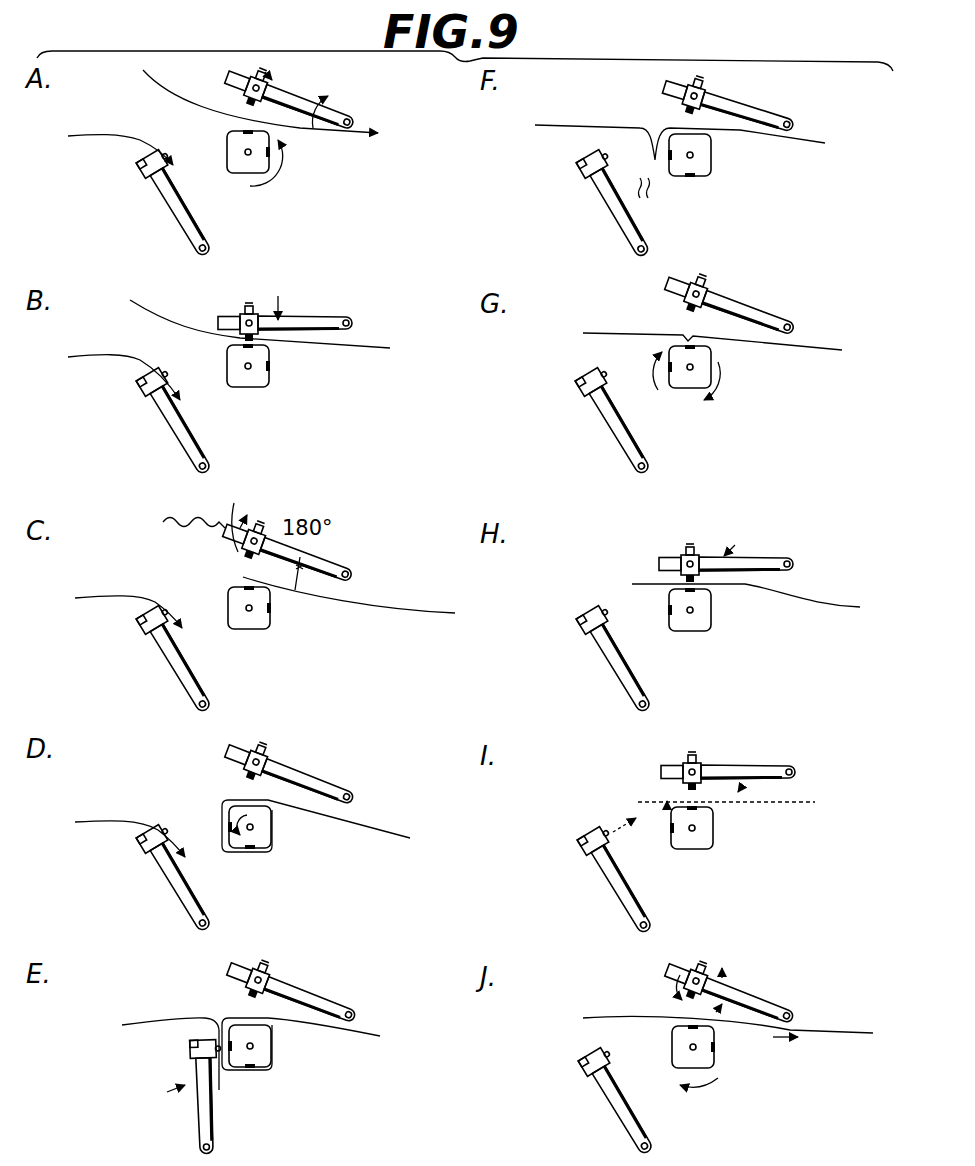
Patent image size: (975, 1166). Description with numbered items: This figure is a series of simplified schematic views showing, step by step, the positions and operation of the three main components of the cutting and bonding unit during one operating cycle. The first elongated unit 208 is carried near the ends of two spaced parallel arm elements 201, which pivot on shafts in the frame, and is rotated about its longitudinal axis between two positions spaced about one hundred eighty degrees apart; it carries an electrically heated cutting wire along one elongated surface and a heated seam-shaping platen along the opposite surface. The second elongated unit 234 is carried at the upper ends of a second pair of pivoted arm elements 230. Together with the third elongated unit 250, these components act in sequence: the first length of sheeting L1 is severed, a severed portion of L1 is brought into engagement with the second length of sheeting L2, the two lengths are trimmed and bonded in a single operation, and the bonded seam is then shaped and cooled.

The arm elements 201 is at (291, 100).
The first elongated unit 208 is at (245, 78).
The arm elements 230 is at (165, 205).
The second elongated unit 234 is at (140, 167).
The third elongated unit 250 is at (232, 170).
The first length of sheeting L1 is at (152, 96).
The second length of sheeting L2 is at (98, 138).